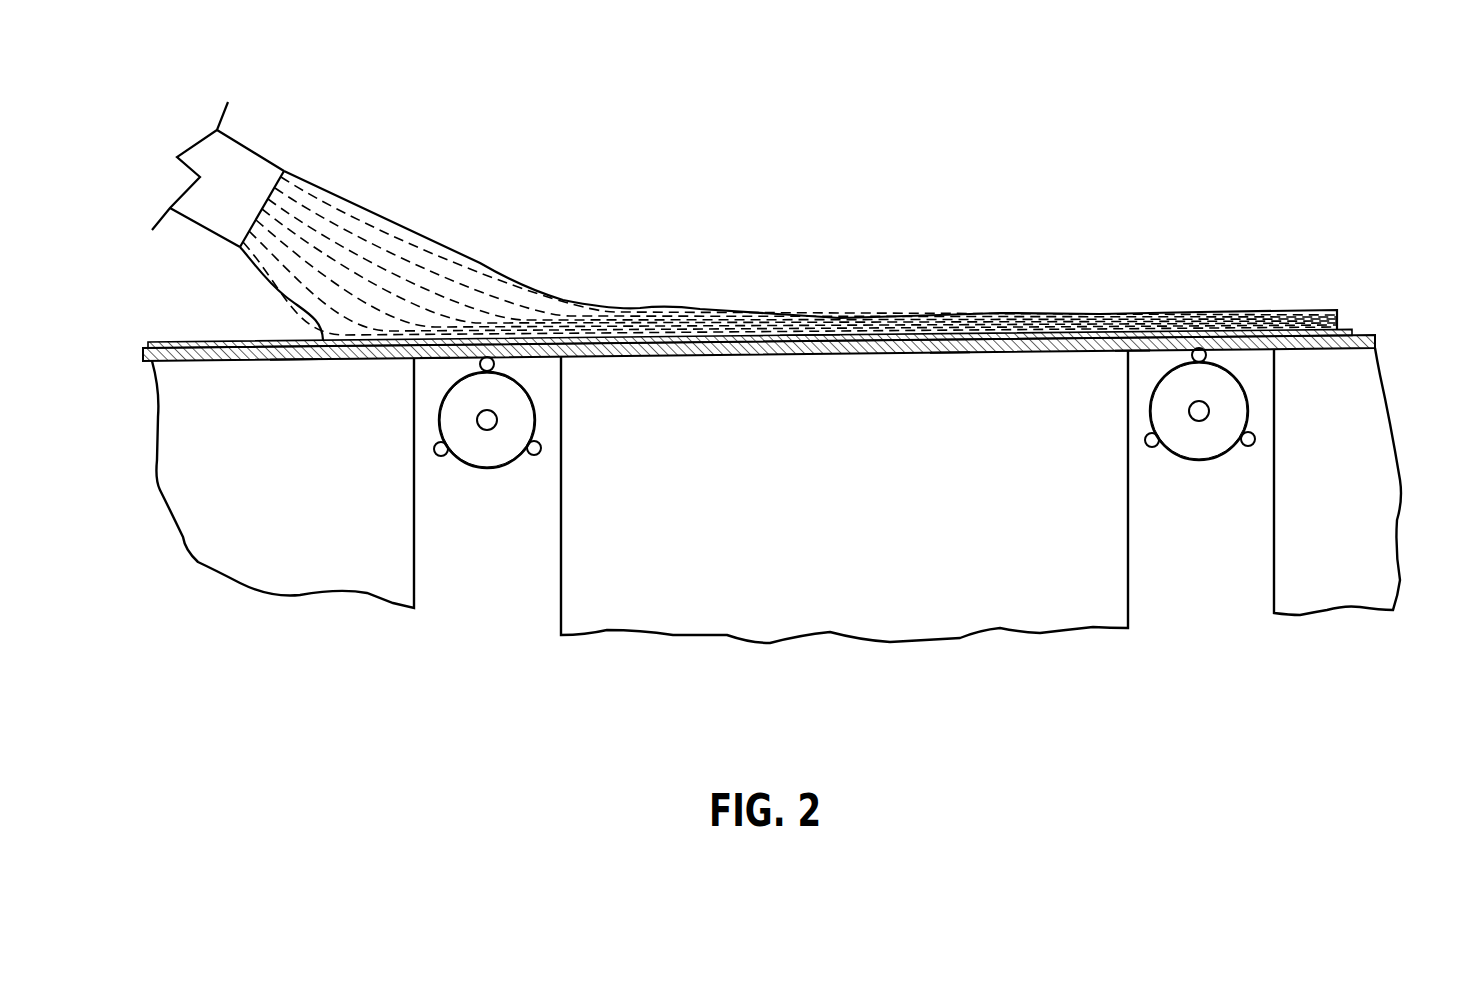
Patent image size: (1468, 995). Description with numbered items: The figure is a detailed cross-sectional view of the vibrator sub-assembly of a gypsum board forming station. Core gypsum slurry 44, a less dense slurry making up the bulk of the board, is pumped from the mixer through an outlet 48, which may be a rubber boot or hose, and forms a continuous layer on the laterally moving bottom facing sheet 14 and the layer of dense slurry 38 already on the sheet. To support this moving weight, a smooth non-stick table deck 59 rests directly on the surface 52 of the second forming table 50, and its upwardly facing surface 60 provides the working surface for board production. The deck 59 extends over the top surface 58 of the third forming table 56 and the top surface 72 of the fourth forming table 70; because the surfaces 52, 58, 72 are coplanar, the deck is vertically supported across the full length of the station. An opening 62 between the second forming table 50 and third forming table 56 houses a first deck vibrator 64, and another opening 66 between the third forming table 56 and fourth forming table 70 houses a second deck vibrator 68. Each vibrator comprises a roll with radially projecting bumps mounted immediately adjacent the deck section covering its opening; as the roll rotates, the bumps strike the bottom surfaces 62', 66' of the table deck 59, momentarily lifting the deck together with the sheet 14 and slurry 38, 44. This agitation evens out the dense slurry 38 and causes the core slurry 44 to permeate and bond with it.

The bottom facing sheet 14 is at (873, 333).
The dense slurry 38 is at (808, 333).
The core gypsum slurry 44 is at (473, 270).
The outlet 48 is at (262, 172).
The second forming table 50 is at (260, 529).
The surface of table 52 is at (293, 361).
The third forming table 56 is at (830, 572).
The top surface 58 is at (948, 353).
The table deck 59 is at (258, 338).
The upwardly facing surface 60 is at (150, 343).
The opening 62 is at (487, 638).
The bottom surface of the table deck 62' is at (403, 381).
The first deck vibrator 64 is at (488, 466).
The opening 66 is at (1201, 644).
The bottom surface of the table deck 66' is at (1105, 373).
The second deck vibrator 68 is at (1203, 456).
The fourth forming table 70 is at (1318, 566).
The top surface 72 is at (1365, 343).